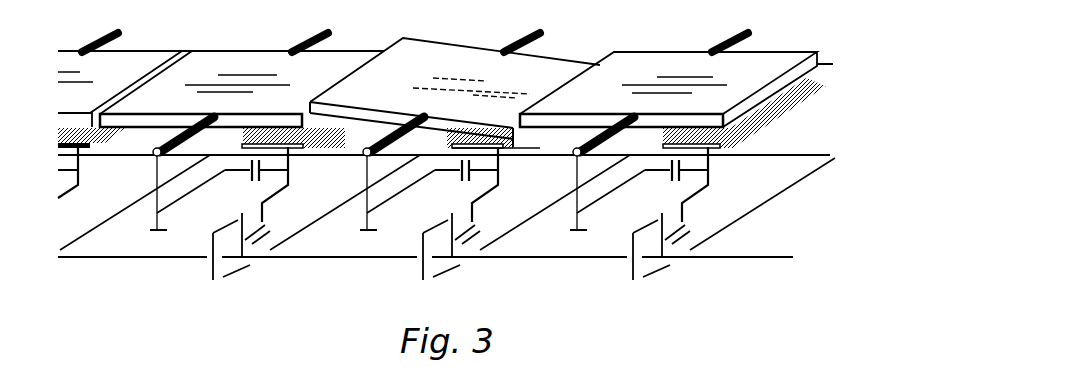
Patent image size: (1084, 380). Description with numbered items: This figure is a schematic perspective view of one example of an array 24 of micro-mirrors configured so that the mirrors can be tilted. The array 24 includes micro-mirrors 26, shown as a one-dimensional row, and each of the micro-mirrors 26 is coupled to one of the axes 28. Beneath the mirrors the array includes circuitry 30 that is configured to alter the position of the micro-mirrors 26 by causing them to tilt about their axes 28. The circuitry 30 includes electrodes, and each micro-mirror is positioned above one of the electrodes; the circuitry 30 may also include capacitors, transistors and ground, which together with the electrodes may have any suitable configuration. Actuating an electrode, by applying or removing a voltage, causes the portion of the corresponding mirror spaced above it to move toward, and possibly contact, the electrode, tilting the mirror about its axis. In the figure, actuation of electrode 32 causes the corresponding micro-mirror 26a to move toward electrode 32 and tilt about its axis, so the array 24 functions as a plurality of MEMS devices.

The array 24 is at (890, 31).
The micro-mirrors 26 is at (760, 65).
The micro-mirror 26a is at (427, 50).
The axes 28 is at (743, 33).
The circuitry 30 is at (814, 212).
The electrode 32 is at (503, 150).